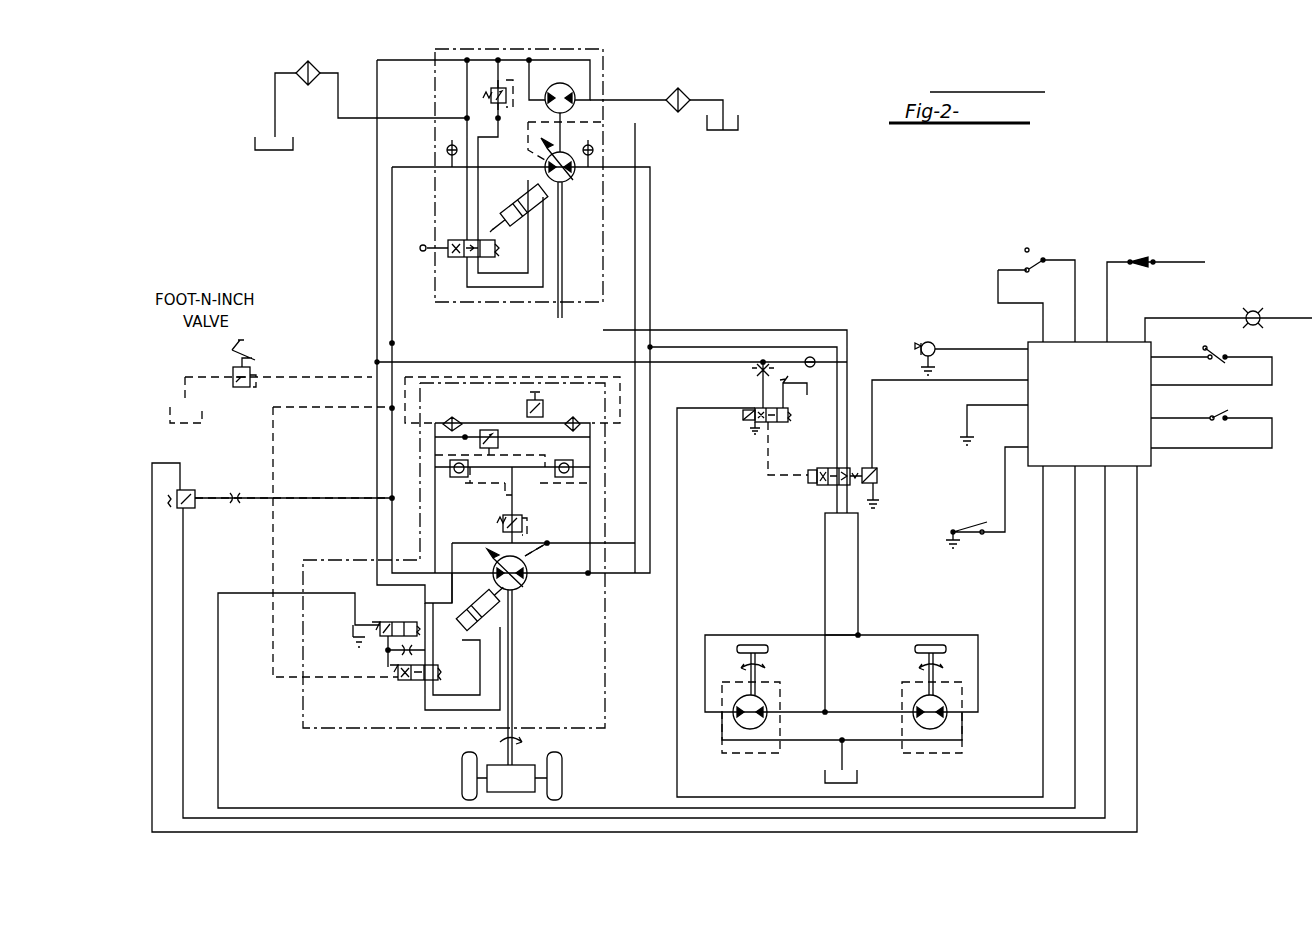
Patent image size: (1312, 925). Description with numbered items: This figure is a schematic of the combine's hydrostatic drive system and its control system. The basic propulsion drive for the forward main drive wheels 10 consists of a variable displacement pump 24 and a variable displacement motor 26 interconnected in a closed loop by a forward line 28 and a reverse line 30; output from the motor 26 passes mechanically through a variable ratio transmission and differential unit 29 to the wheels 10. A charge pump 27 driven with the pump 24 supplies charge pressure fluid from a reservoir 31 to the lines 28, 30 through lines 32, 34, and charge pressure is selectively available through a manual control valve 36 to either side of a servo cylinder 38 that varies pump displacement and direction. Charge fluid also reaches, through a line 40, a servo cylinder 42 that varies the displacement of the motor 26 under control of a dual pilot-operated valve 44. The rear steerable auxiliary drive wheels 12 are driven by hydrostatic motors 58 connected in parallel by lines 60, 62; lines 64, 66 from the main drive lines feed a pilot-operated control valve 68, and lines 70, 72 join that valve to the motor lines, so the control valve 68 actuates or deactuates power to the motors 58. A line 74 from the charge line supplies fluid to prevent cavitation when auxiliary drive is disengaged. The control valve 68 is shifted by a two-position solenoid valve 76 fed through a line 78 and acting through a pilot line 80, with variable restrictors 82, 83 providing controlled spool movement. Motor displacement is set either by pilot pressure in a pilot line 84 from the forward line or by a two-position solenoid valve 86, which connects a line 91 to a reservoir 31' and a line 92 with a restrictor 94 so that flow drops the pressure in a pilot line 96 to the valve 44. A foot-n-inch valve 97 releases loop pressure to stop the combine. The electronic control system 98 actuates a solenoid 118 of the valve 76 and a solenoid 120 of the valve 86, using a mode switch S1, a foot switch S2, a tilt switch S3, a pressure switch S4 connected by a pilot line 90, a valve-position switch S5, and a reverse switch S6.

The forward main drive wheels 10 is at (462, 765).
The rear steerable auxiliary drive wheels 12 is at (753, 645).
The variable displacement pump 24 is at (577, 182).
The variable displacement motor 26 is at (527, 583).
The charge pump 27 is at (570, 88).
The forward line 28 is at (392, 272).
The variable ratio transmission and differential unit 29 is at (525, 789).
The reverse line 30 is at (652, 287).
The reservoir 31 is at (689, 109).
The reservoir 31' is at (361, 120).
The line 32 is at (463, 95).
The line 34 is at (603, 72).
The manual control valve 36 is at (456, 238).
The servo cylinder 38 is at (530, 200).
The line 40 is at (377, 222).
The servo cylinder 42 is at (508, 625).
The dual pilot-operated valve 44 is at (415, 693).
The hydrostatic motors 58 is at (765, 705).
The line 60 is at (900, 635).
The line 62 is at (842, 727).
The line 64 is at (705, 330).
The line 66 is at (736, 347).
The pilot-operated control valve 68 is at (823, 490).
The line 70 is at (858, 566).
The line 72 is at (825, 553).
The line 74 is at (673, 362).
The two-position solenoid valve 76 is at (766, 440).
The line 78 is at (755, 395).
The pilot line 80 is at (760, 475).
The variable restrictor 82 is at (760, 368).
The variable restrictor 83 is at (802, 405).
The pilot line 84 is at (275, 545).
The two-position solenoid valve 86 is at (380, 615).
The pilot line 90 is at (310, 488).
The line 91 is at (402, 118).
The line 92 is at (430, 652).
The restrictor 94 is at (405, 665).
The pilot line 96 is at (400, 677).
The foot-n-inch valve 97 is at (255, 375).
The electronic control system 98 is at (988, 287).
The solenoid 118 is at (745, 418).
The solenoid 120 is at (378, 625).
The switch S1 is at (1040, 255).
The foot switch S2 is at (1225, 347).
The tilt switch S3 is at (1230, 420).
The pressure switch S4 is at (200, 490).
The switch S5 is at (880, 470).
The switch S6 is at (962, 528).